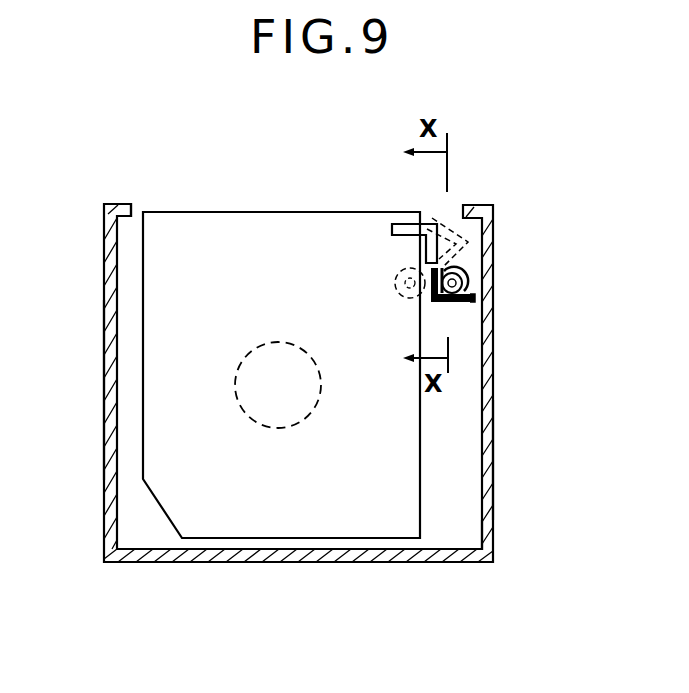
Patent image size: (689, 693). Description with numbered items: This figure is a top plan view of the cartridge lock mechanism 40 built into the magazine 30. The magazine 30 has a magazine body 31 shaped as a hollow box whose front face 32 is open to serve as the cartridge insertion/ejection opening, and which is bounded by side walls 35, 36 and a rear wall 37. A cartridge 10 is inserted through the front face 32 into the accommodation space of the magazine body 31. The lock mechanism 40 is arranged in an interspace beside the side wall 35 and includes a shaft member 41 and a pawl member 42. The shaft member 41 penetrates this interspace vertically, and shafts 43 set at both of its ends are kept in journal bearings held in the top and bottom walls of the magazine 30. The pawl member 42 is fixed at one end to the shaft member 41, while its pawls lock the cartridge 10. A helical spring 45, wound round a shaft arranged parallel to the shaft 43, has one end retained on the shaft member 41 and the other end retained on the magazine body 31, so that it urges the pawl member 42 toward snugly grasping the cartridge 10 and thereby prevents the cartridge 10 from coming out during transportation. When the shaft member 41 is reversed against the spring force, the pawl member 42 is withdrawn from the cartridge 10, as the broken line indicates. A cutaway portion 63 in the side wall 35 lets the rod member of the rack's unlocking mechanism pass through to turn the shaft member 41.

The cartridge 10 is at (248, 242).
The magazine 30 is at (163, 571).
The magazine body 31 is at (497, 535).
The front face 32 is at (165, 204).
The side wall 35 is at (492, 463).
The side wall 36 is at (105, 388).
The rear wall 37 is at (352, 563).
The lock mechanism 40 is at (460, 241).
The shaft member 41 is at (464, 305).
The pawl member 42 is at (398, 222).
The shaft 43 is at (403, 292).
The helical spring 45 is at (463, 277).
The cutaway portion 63 is at (478, 297).